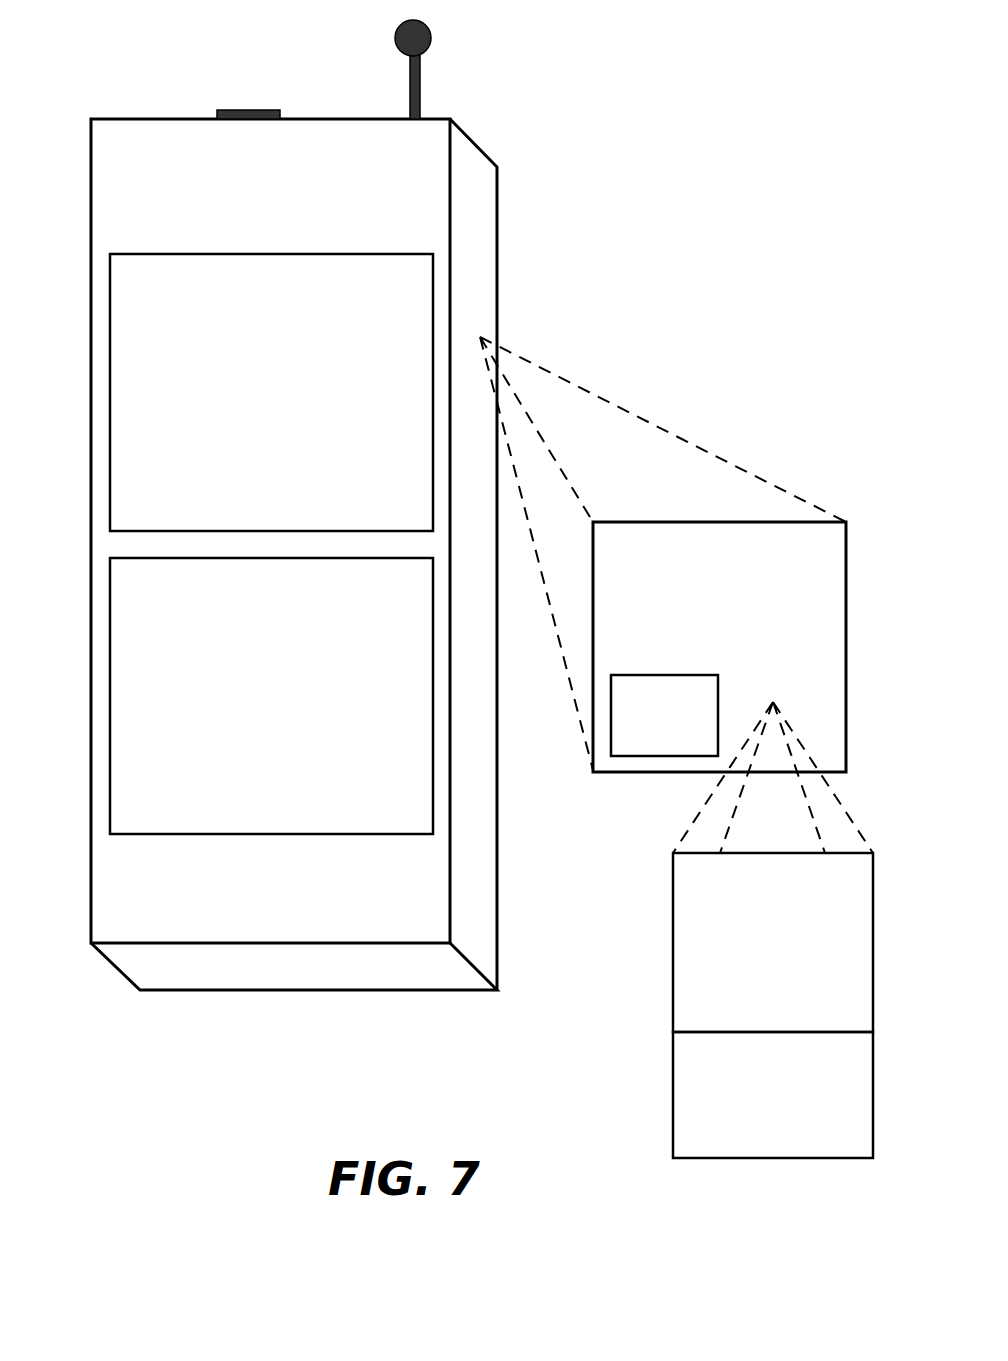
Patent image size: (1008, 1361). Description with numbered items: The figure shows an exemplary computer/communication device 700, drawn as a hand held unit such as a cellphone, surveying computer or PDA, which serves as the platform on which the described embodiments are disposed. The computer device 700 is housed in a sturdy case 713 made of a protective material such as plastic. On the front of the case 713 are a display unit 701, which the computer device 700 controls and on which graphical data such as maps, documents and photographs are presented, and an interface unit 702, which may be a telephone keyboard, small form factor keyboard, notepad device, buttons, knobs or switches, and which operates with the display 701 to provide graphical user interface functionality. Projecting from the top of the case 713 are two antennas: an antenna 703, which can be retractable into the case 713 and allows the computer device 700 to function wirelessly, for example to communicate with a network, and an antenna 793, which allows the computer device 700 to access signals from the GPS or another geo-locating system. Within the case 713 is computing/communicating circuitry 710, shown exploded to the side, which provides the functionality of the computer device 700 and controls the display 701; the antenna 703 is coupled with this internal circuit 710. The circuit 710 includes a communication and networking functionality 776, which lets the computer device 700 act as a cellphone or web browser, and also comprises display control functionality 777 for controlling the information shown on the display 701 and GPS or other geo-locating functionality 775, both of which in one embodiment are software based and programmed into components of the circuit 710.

The computer device 700 is at (91, 142).
The display unit 701 is at (115, 277).
The interface unit 702 is at (115, 580).
The antenna 703 is at (420, 80).
The computing/communicating circuitry 710 is at (695, 772).
The case 713 is at (486, 290).
The GPS functionality 775 is at (673, 1068).
The communication and networking functionality 776 is at (636, 748).
The display control functionality 777 is at (673, 898).
The antenna 793 is at (233, 110).